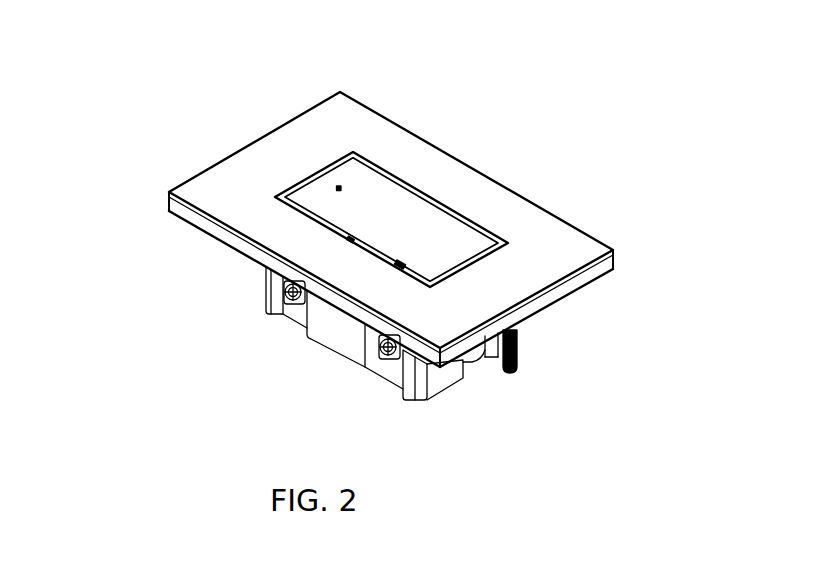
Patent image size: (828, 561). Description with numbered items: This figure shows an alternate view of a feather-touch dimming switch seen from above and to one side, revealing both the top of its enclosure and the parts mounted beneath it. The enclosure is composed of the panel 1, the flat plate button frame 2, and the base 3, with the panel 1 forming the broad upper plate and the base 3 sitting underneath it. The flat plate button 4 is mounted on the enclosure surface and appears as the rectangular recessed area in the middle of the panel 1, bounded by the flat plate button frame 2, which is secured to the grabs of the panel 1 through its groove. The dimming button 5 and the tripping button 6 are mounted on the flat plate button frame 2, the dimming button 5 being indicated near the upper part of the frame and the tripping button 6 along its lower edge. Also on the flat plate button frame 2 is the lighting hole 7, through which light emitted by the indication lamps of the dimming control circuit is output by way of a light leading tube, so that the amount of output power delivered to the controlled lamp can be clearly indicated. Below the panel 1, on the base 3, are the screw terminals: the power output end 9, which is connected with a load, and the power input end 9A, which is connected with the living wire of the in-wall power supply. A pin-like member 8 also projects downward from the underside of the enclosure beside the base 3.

The panel 1 is at (225, 185).
The flat plate button frame 2 is at (500, 240).
The base 3 is at (438, 375).
The flat plate button 4 is at (395, 193).
The dimming button 5 is at (339, 186).
The tripping button 6 is at (336, 236).
The lighting hole 7 is at (403, 270).
The pin 8 is at (518, 350).
The power output end 9 is at (283, 295).
The power input end 9A is at (383, 355).